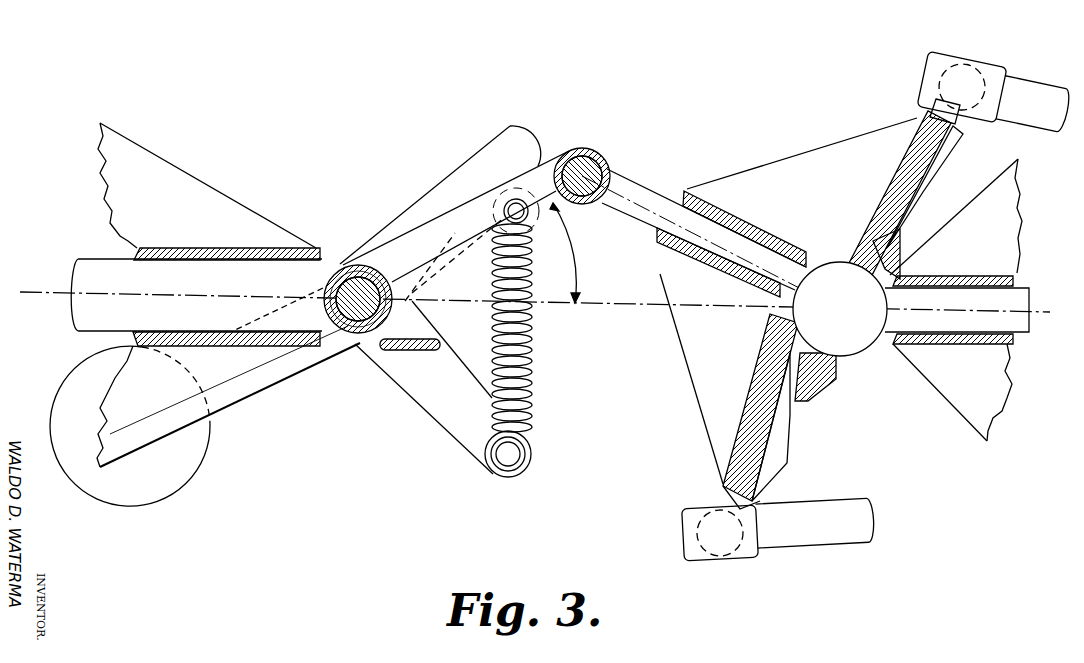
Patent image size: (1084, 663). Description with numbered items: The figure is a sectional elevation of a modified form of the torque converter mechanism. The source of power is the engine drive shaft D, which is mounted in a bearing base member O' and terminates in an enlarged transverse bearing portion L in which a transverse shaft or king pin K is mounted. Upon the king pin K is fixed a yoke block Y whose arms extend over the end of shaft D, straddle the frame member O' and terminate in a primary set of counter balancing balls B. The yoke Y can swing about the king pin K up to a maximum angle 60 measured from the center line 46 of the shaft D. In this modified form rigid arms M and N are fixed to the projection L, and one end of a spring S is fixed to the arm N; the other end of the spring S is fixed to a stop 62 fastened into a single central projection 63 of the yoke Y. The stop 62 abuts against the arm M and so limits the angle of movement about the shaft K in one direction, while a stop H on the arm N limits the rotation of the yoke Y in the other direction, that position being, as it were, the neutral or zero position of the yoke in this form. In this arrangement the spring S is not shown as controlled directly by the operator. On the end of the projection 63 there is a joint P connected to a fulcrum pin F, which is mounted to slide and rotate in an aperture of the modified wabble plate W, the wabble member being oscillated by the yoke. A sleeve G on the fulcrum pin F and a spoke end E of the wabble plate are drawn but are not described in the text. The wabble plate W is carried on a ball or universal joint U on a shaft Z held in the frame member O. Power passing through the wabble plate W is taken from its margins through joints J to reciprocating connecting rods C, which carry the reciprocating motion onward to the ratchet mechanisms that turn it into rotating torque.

The center line 46 is at (62, 292).
The shaft D is at (100, 265).
The bearing base member O' is at (208, 295).
The counter balancing balls B is at (167, 477).
The yoke block Y is at (240, 393).
The transverse bearing portion L is at (346, 263).
The king pin K is at (356, 320).
The rigid arm M is at (463, 168).
The central projection 63 is at (440, 230).
The rigid arm N is at (442, 413).
The stop H is at (401, 352).
The stop 62 is at (520, 200).
The spring S is at (530, 320).
The joint P is at (583, 147).
The maximum angle 60 is at (566, 253).
The fulcrum pin F is at (623, 183).
The sleeve G is at (658, 238).
The wabble plate W is at (857, 230).
The universal joint U is at (860, 337).
The spoke end E is at (727, 493).
The joint J is at (945, 60).
The connecting rod C is at (1028, 83).
The shaft Z is at (1010, 327).
The frame member O is at (958, 307).